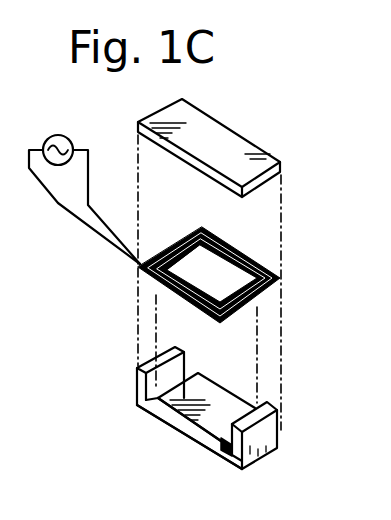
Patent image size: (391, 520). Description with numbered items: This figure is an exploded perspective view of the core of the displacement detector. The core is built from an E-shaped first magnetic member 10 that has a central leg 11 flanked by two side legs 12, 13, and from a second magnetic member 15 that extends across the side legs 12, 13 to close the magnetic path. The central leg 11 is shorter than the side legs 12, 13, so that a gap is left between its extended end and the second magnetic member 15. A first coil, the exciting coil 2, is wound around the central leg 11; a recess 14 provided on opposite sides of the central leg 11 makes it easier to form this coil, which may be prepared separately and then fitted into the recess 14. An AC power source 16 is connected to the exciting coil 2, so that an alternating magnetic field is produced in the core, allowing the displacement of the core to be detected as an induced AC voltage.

The exciting coil 2 is at (282, 285).
The first magnetic member 10 is at (192, 442).
The central leg 11 is at (173, 408).
The side leg 12 is at (137, 387).
The side leg 13 is at (278, 420).
The recess 14 is at (228, 458).
The second magnetic member 15 is at (222, 147).
The AC power source 16 is at (50, 136).